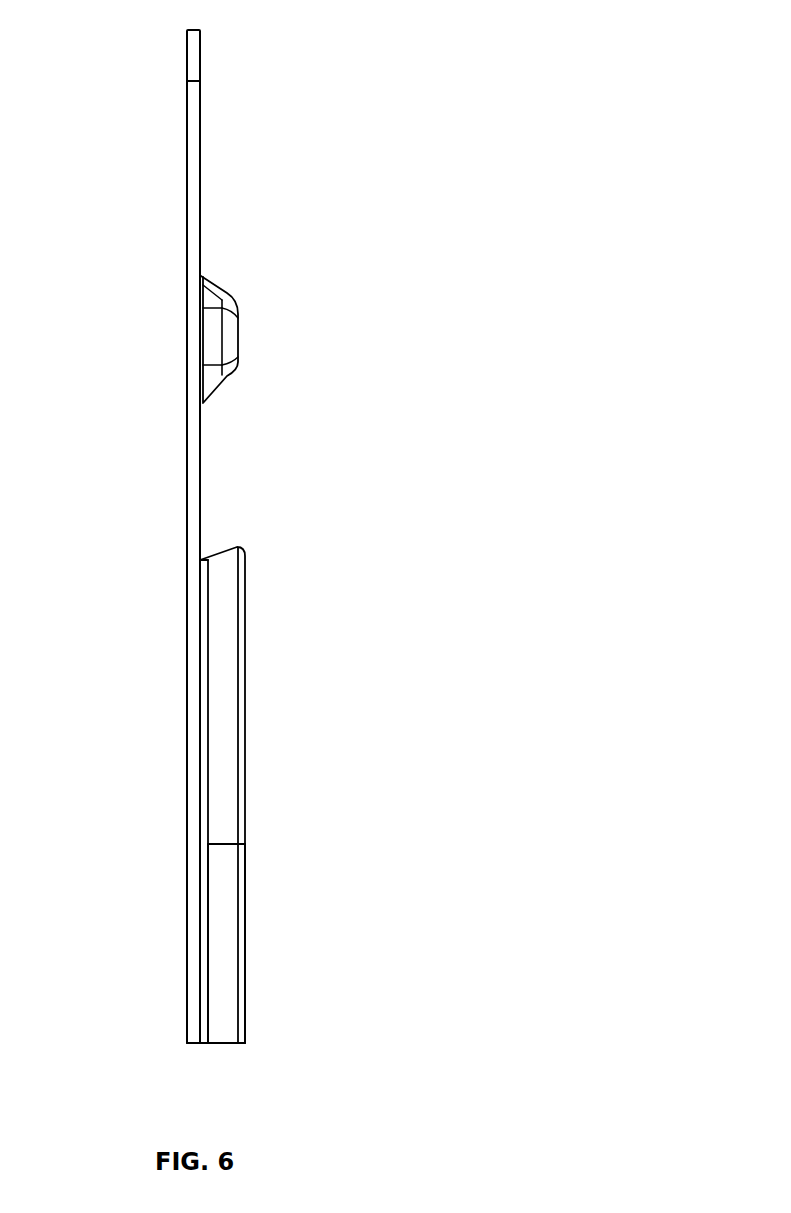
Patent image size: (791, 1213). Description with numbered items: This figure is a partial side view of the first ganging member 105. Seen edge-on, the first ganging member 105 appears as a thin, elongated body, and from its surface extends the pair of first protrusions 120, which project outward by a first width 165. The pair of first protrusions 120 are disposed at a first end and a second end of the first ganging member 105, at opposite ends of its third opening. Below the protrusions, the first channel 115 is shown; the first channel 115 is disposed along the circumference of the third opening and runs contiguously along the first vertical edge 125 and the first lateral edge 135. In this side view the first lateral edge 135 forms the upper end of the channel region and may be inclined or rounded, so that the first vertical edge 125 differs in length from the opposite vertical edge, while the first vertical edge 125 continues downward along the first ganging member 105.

The first ganging member 105 is at (201, 51).
The pair of first protrusions 120 is at (239, 333).
The first width 165 is at (214, 287).
The first channel 115 is at (208, 560).
The first lateral edge 135 is at (245, 597).
The first vertical edge 125 is at (245, 952).